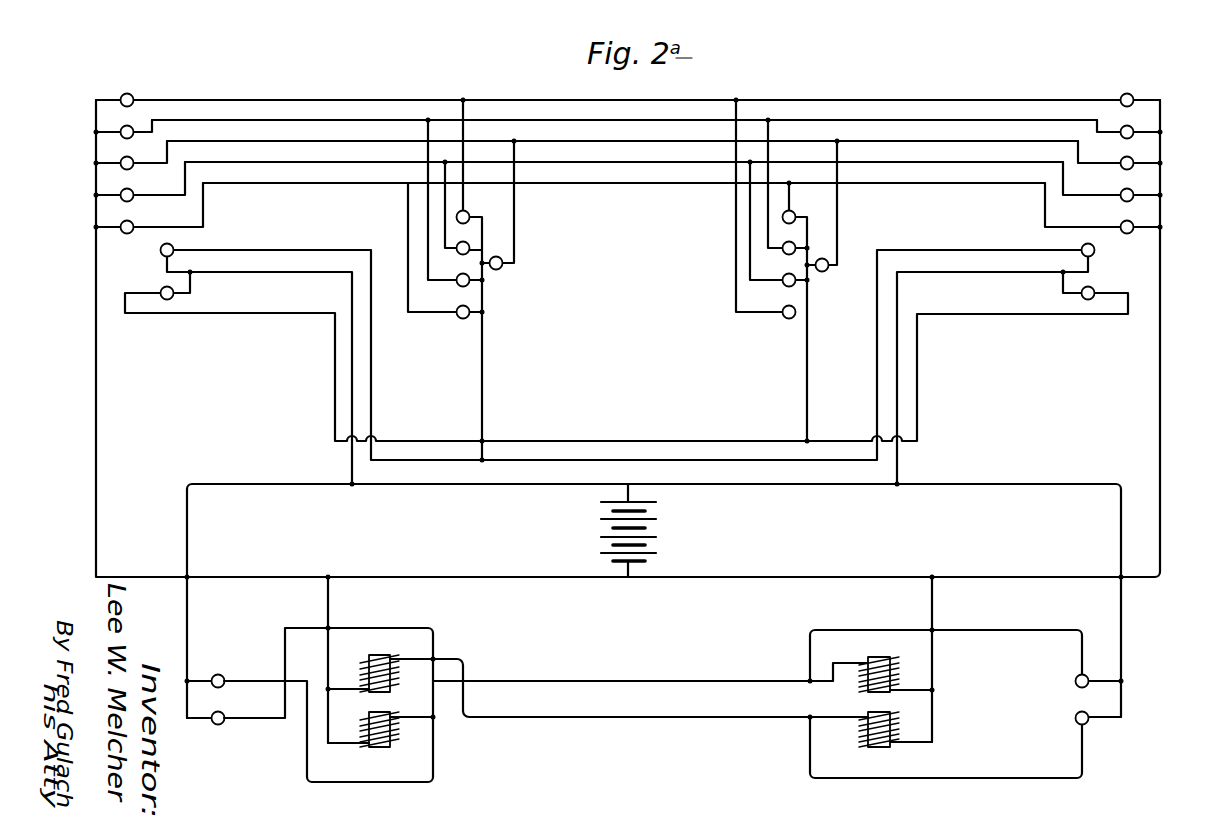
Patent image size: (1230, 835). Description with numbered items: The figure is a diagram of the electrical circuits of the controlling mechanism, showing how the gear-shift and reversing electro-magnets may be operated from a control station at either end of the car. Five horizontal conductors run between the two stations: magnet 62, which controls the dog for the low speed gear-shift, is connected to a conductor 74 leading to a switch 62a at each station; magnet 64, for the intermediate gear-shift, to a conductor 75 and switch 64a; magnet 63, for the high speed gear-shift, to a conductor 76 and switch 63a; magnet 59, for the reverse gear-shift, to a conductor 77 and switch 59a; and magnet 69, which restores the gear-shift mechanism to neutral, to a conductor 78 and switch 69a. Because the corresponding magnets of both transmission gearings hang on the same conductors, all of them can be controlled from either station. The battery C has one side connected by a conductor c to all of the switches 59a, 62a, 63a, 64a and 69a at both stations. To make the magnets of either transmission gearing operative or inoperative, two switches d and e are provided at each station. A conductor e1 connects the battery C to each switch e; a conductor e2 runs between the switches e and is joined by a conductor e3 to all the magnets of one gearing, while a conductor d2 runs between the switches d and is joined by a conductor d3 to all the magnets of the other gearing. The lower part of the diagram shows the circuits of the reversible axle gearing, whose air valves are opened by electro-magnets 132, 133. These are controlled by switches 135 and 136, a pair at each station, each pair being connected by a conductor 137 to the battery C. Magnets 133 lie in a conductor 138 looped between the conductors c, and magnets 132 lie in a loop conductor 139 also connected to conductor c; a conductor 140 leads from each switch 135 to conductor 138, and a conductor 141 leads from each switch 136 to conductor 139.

The switch 64a is at (1130, 71).
The switch 62a is at (1180, 110).
The switch 69a is at (1203, 166).
The switch 63a is at (1206, 206).
The switch 59a is at (1203, 248).
The conductor 74 is at (292, 120).
The conductor 75 is at (347, 100).
The conductor 76 is at (330, 163).
The conductor 77 is at (270, 183).
The conductor 78 is at (597, 141).
The magnet 64 is at (470, 217).
The magnet 63 is at (469, 248).
The magnet 69 is at (502, 265).
The magnet 62 is at (469, 280).
The magnet 59 is at (469, 312).
The switch e is at (160, 250).
The conductor e1 is at (951, 366).
The conductor e2 is at (937, 238).
The conductor e3 is at (482, 403).
The switch d is at (167, 300).
The conductor d2 is at (992, 326).
The conductor d3 is at (807, 383).
The conductor c is at (96, 445).
The battery C is at (657, 518).
The conductor 137 is at (260, 485).
The switch 136 is at (222, 673).
The switch 135 is at (220, 726).
The conductor 141 is at (250, 680).
The conductor 140 is at (253, 718).
The electro-magnet 133 is at (380, 657).
The electro-magnet 132 is at (383, 747).
The loop conductor 139 is at (628, 672).
The conductor 138 is at (533, 718).